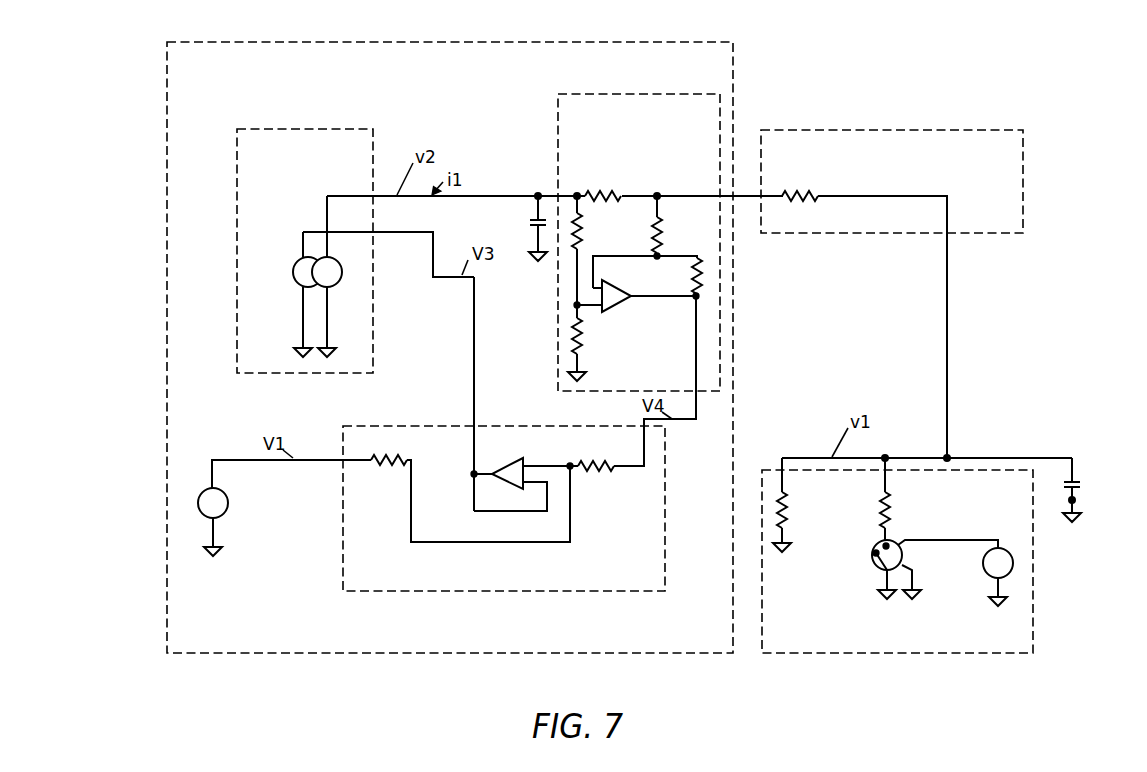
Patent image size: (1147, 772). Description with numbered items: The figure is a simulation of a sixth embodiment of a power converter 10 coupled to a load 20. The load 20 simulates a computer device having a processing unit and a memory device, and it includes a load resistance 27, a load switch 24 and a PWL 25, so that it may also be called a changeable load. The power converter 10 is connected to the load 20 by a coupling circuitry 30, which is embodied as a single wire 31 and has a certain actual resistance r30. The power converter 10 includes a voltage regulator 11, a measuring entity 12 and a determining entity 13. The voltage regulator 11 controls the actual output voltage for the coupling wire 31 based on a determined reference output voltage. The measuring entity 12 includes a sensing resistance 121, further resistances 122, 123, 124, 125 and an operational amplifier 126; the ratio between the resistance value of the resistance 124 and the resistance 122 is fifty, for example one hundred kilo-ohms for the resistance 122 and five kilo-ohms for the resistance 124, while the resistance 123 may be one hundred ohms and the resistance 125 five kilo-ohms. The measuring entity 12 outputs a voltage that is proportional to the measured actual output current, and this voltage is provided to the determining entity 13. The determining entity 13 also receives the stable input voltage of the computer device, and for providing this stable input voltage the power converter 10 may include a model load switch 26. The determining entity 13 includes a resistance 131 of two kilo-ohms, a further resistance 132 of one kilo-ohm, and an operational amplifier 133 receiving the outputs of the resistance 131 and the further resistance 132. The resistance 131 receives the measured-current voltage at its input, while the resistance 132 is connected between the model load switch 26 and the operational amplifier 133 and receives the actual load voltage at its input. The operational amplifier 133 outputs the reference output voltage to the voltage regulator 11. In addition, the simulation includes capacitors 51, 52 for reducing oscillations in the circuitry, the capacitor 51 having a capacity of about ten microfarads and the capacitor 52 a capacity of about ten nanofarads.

The power converter 10 is at (663, 42).
The voltage regulator 11 is at (373, 153).
The measuring entity 12 is at (683, 93).
The determining entity 13 is at (342, 547).
The load 20 is at (1033, 593).
The load switch 24 is at (903, 523).
The PWL 25 is at (983, 574).
The model load switch 26 is at (228, 499).
The load resistance 27 is at (792, 510).
The coupling circuitry 30 is at (997, 130).
The wire 31 is at (863, 196).
The actual resistance r30 is at (810, 192).
The capacitor 51 is at (533, 220).
The capacitor 52 is at (1080, 482).
The sensing resistance 121 is at (617, 192).
The resistance 122 is at (587, 240).
The resistance 123 is at (665, 242).
The resistance 124 is at (587, 337).
The resistance 125 is at (690, 283).
The operational amplifier 126 is at (622, 303).
The resistance 131 is at (588, 460).
The further resistance 132 is at (396, 456).
The operational amplifier 133 is at (510, 470).